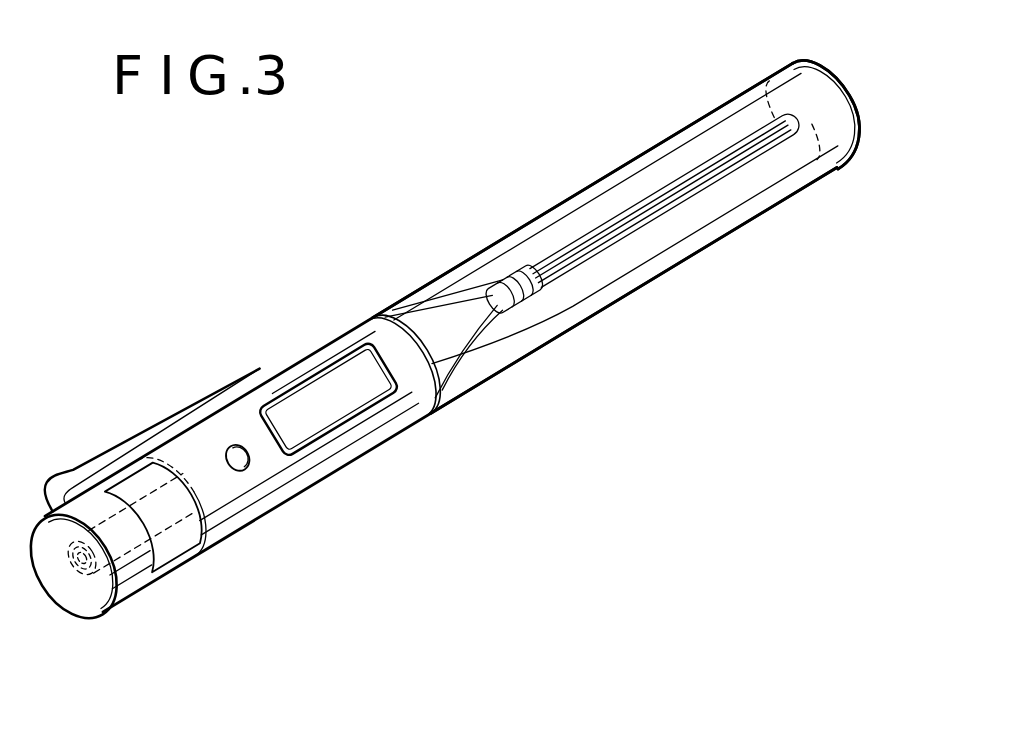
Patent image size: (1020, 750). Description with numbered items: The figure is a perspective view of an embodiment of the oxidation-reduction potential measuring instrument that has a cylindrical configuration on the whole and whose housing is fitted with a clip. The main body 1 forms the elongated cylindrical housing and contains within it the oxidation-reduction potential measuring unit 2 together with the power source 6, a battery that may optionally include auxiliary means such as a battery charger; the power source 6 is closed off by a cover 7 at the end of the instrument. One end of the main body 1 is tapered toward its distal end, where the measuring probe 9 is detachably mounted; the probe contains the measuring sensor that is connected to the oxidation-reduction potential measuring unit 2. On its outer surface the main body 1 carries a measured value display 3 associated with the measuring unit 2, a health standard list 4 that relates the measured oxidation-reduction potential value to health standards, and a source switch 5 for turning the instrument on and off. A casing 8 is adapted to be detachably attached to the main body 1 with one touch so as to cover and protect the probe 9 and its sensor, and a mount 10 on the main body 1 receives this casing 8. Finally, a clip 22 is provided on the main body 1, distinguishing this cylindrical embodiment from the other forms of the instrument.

The main body 1 is at (205, 447).
The oxidation-reduction potential measuring unit 2 is at (243, 490).
The measured value display 3 is at (358, 368).
The health standard list 4 is at (177, 527).
The source switch 5 is at (250, 470).
The power source 6 is at (80, 563).
The cover 7 is at (107, 607).
The casing 8 is at (650, 150).
The measuring probe 9 is at (560, 250).
The mount 10 is at (447, 407).
The clip 22 is at (139, 432).